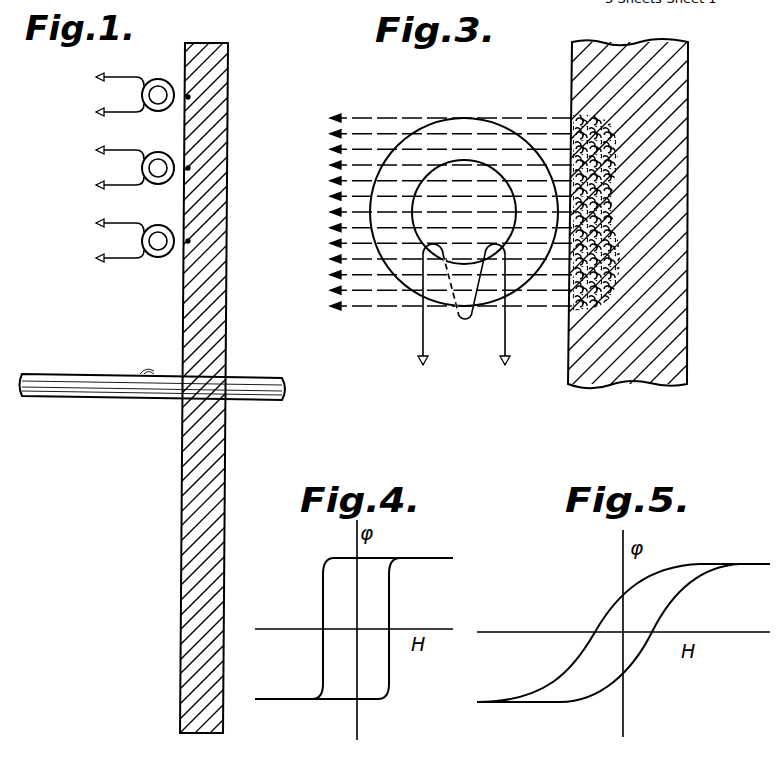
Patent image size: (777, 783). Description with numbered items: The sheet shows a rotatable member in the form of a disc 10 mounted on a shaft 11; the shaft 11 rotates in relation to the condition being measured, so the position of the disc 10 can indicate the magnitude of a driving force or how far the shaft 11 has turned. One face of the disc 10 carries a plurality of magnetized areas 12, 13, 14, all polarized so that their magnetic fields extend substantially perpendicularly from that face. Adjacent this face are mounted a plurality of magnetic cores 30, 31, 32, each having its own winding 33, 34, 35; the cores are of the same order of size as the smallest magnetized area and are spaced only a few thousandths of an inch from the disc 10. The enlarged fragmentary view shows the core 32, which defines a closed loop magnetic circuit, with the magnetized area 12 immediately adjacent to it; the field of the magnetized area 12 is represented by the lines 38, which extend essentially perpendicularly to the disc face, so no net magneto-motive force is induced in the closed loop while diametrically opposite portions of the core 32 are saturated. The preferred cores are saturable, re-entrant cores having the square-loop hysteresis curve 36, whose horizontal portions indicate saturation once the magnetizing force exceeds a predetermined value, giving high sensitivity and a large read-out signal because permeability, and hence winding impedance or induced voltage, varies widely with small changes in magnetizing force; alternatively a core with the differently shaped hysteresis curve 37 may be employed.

In FIG. 1, the disc 10 is at (225, 306).
In FIG. 3, the disc 10 is at (672, 315).
In FIG. 1, the shaft 11 is at (96, 401).
In FIG. 1, the magnetized area 12 is at (188, 241).
In FIG. 3, the magnetized area 12 is at (605, 212).
In FIG. 1, the magnetized area 13 is at (188, 168).
In FIG. 1, the magnetized area 14 is at (188, 97).
In FIG. 1, the magnetic core 30 is at (160, 80).
In FIG. 1, the magnetic core 31 is at (160, 153).
In FIG. 1, the magnetic core 32 is at (160, 226).
In FIG. 3, the magnetic core 32 is at (460, 125).
In FIG. 1, the winding 33 is at (146, 92).
In FIG. 1, the winding 34 is at (146, 165).
In FIG. 1, the winding 35 is at (146, 238).
In FIG. 3, the winding 35 is at (463, 327).
In FIG. 4, the hysteresis curve 36 is at (392, 607).
In FIG. 5, the hysteresis curve 37 is at (670, 607).
In FIG. 3, the lines 38 is at (386, 127).